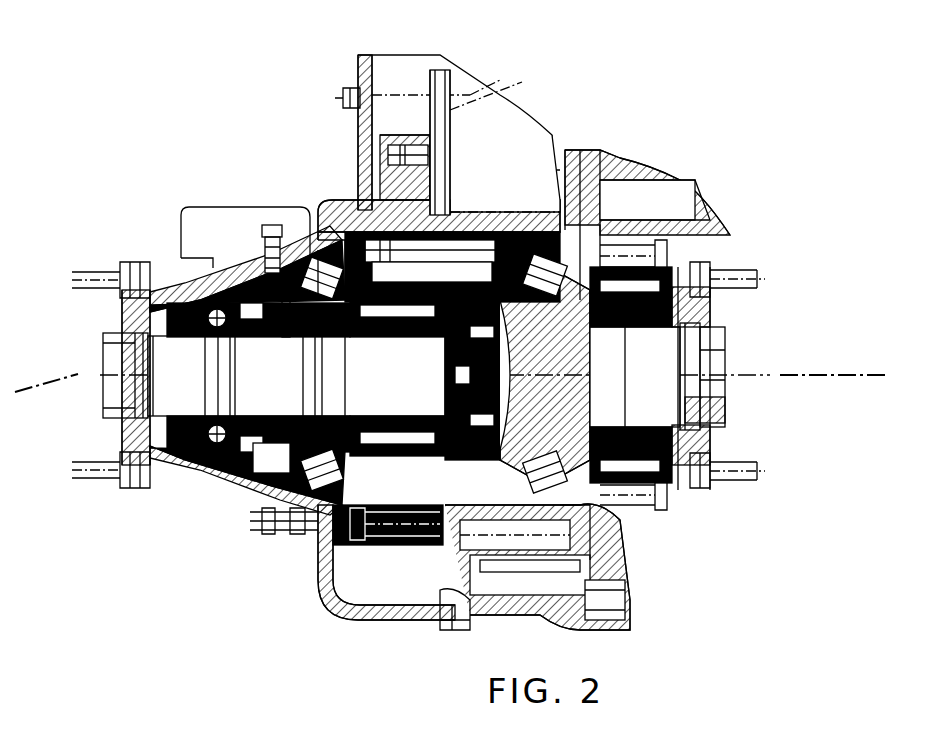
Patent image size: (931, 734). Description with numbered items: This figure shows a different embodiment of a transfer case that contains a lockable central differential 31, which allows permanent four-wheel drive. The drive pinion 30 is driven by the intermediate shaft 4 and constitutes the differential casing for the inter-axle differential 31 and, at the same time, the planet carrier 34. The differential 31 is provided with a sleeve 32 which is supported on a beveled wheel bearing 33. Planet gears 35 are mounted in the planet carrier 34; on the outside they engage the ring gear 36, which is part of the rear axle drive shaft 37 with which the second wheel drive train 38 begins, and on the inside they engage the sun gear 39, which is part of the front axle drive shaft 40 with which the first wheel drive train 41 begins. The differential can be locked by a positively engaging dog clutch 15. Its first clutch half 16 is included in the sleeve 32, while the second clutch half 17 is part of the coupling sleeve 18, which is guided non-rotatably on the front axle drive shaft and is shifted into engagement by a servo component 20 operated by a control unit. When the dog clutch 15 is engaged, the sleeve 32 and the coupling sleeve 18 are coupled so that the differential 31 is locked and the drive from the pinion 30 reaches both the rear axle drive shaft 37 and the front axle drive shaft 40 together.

The intermediate shaft 4 is at (437, 105).
The dog clutch 15 is at (272, 225).
The first clutch half 16 is at (286, 300).
The second clutch half 17 is at (282, 300).
The coupling sleeve 18 is at (240, 488).
The servo component 20 is at (190, 215).
The drive pinion 30 is at (520, 227).
The central differential 31 is at (313, 195).
The sleeve 32 is at (267, 527).
The beveled wheel bearing 33 is at (303, 537).
The planet carrier 34 is at (365, 547).
The planet gears 35 is at (343, 207).
The ring gear 36 is at (453, 217).
The rear axle drive shaft 37 is at (663, 387).
The second wheel drive train 38 is at (832, 373).
The sun gear 39 is at (410, 547).
The front axle drive shaft 40 is at (167, 398).
The first wheel drive train 41 is at (55, 372).